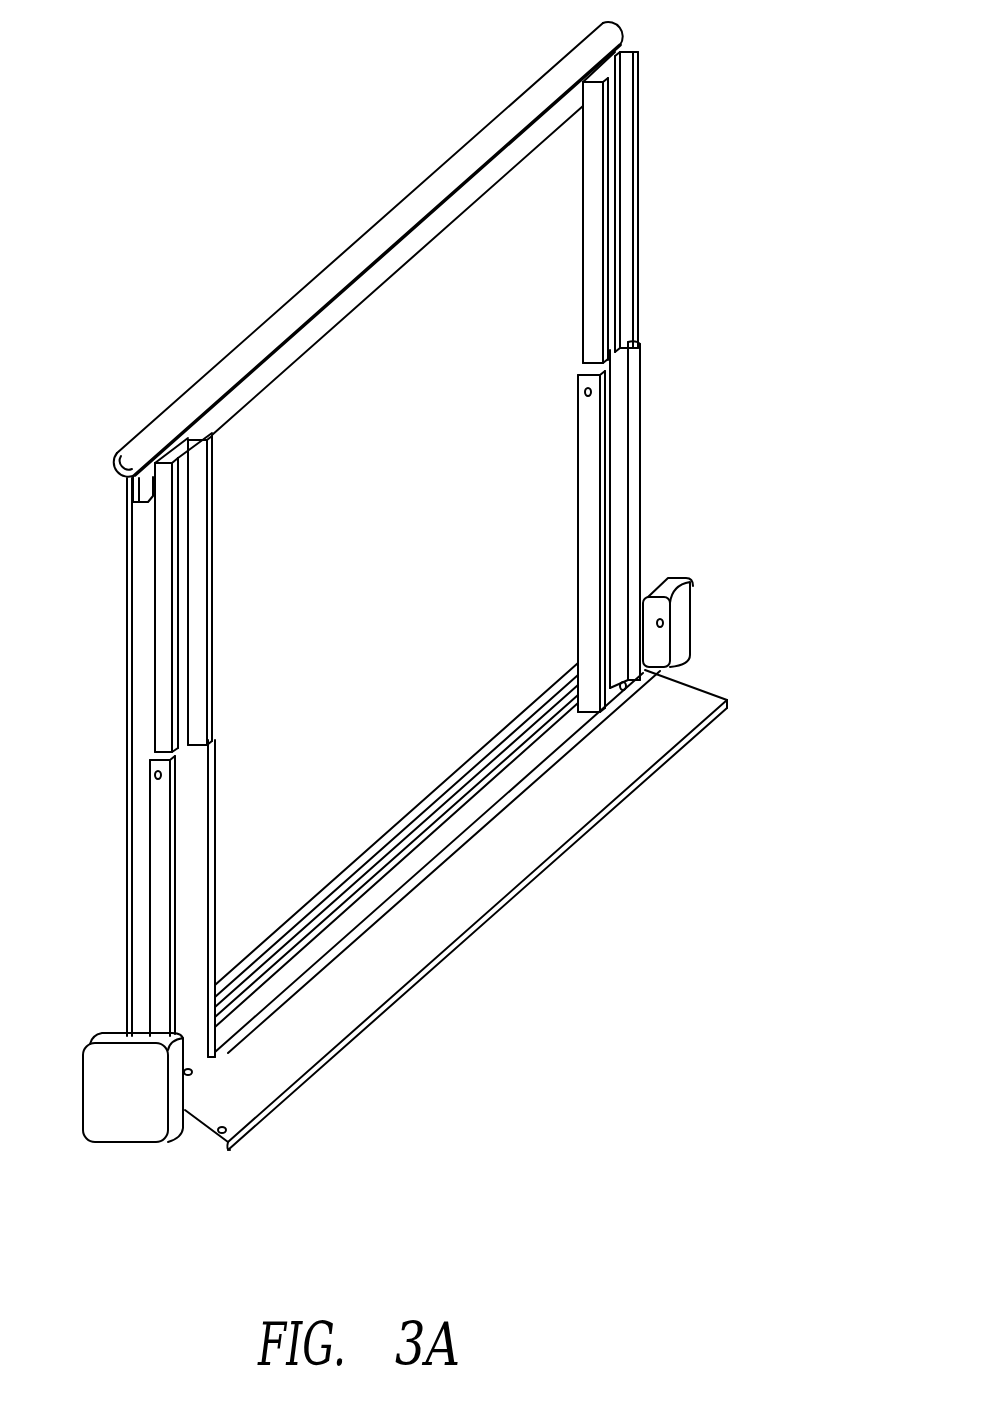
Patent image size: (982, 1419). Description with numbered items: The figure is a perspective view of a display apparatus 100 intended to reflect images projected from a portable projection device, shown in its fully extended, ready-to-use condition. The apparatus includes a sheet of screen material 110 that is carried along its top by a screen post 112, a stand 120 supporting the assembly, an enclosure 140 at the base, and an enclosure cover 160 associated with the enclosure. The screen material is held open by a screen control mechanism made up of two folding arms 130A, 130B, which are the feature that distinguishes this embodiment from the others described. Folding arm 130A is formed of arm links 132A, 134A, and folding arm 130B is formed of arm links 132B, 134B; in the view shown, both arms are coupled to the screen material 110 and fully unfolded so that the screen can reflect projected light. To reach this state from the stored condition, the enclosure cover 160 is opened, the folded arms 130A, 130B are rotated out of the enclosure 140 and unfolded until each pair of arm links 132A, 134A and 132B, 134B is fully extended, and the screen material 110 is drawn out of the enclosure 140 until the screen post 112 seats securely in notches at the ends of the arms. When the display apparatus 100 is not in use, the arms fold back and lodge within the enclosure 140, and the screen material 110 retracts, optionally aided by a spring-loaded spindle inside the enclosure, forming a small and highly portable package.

The display apparatus 100 is at (188, 355).
The screen material 110 is at (440, 571).
The screen post 112 is at (528, 145).
The stand 120 is at (467, 864).
The folding arm 130A is at (250, 745).
The folding arm 130B is at (587, 382).
The arm link 132A is at (212, 503).
The arm link 132B is at (638, 157).
The arm link 134A is at (215, 808).
The arm link 134B is at (645, 430).
The enclosure 140 is at (143, 1112).
The enclosure cover 160 is at (297, 1037).